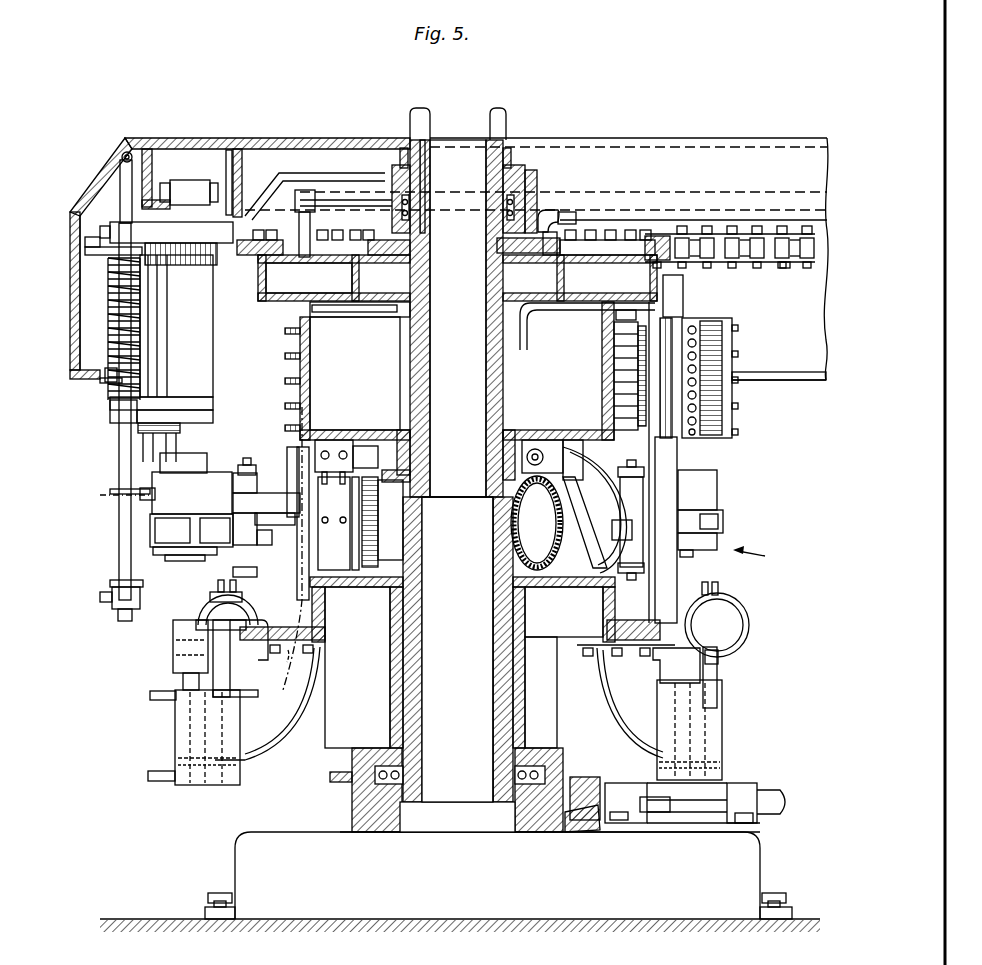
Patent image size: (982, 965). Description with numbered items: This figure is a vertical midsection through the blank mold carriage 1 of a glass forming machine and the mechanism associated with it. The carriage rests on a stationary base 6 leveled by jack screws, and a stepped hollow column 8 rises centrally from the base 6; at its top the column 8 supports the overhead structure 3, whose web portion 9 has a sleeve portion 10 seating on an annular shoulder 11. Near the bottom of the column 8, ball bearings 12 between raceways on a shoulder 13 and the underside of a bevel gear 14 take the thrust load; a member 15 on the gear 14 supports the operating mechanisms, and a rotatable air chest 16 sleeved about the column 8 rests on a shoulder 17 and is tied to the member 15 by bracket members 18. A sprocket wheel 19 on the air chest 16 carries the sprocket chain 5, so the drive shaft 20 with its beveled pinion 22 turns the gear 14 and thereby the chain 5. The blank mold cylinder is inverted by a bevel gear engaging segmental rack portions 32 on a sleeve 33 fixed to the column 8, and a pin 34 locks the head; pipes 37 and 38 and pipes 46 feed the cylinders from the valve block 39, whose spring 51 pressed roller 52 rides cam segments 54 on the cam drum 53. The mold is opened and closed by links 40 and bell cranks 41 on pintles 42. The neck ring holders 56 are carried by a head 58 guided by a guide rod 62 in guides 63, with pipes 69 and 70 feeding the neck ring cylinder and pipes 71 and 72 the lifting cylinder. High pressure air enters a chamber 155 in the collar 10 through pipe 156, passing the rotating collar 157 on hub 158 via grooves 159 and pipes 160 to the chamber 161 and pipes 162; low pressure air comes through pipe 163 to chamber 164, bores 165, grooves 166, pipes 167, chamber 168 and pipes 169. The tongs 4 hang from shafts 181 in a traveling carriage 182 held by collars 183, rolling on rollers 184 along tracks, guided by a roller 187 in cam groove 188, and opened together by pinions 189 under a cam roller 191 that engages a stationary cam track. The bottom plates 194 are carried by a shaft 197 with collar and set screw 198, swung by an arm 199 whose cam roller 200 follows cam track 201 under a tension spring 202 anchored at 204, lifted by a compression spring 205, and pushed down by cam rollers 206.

The blank mold carriage 1 is at (757, 557).
The overhead structure 3 is at (277, 140).
The tongs 4 is at (110, 497).
The sprocket chain 5 is at (785, 264).
The base 6 is at (747, 858).
The stationary hollow column 8 is at (412, 743).
The web portion 9 is at (350, 140).
The sleeve portion 10 is at (447, 200).
The annular shoulder 11 is at (437, 247).
The ball bearings 12 is at (355, 783).
The shoulder 13 is at (420, 788).
The bevel gear 14 is at (350, 748).
The member 15 is at (548, 667).
The air chest 16 is at (280, 303).
The annular shoulder 17 is at (435, 318).
The bracket members 18 is at (677, 452).
The sprocket wheel 19 is at (668, 238).
The drive shaft 20 is at (772, 795).
The beveled pinion 22 is at (577, 830).
The segmental rack portions 32 is at (505, 457).
The annular sleeve portion 33 is at (397, 450).
The pin 34 is at (310, 360).
The pipe 37 is at (335, 440).
The pipe 38 is at (408, 437).
The valve block 39 is at (687, 320).
The links 40 is at (245, 513).
The bell cranks 41 is at (292, 527).
The pintles 42 is at (300, 507).
The pipes 46 is at (338, 520).
The compression spring 51 is at (612, 352).
The roller 52 is at (610, 330).
The cam drum 53 is at (315, 332).
The cam segments 54 is at (287, 332).
The neck ring holders 56 is at (172, 630).
The head 58 is at (227, 660).
The guide rod 62 is at (717, 695).
The guides 63 is at (718, 660).
The pipe 69 is at (235, 583).
The pipe 70 is at (222, 590).
The pipe 71 is at (157, 693).
The pipe 72 is at (153, 777).
The semi-annular stationary chamber 155 is at (523, 160).
The pipe 156 is at (507, 160).
The rotating collar 157 is at (555, 190).
The hub portion 158 is at (578, 204).
The annular grooves 159 is at (393, 220).
The pipes 160 is at (560, 212).
The annular chamber 161 is at (512, 307).
The pipes 162 is at (557, 310).
The pipe 163 is at (420, 128).
The semi-annular chamber 164 is at (433, 142).
The bores 165 is at (387, 197).
The annular grooves 166 is at (545, 200).
The pipes 167 is at (305, 193).
The outer annular chamber 168 is at (258, 293).
The pipes 169 is at (682, 280).
The vertical shafts 181 is at (142, 457).
The traveling carriage 182 is at (200, 397).
The collars 183 is at (103, 404).
The rollers 184 is at (203, 183).
The vertical axis roller 187 is at (265, 230).
The cam groove 188 is at (233, 230).
The pinions 189 is at (150, 410).
The cam roller 191 is at (97, 387).
The bottom plates 194 is at (115, 585).
The vertical shaft 197 is at (127, 527).
The collar and set screw 198 is at (123, 595).
The arm 199 is at (97, 253).
The cam roller 200 is at (90, 230).
The cam track 201 is at (100, 252).
The tension spring 202 is at (187, 270).
The anchorage 204 is at (277, 285).
The compression spring 205 is at (115, 280).
The cam rollers 206 is at (127, 152).